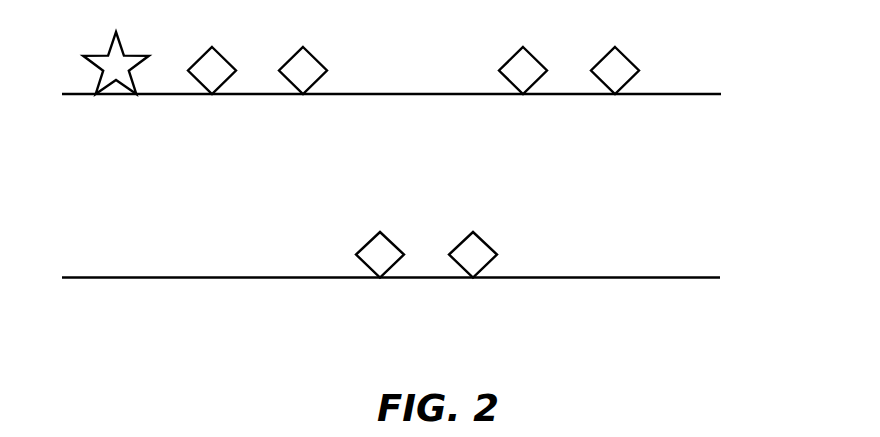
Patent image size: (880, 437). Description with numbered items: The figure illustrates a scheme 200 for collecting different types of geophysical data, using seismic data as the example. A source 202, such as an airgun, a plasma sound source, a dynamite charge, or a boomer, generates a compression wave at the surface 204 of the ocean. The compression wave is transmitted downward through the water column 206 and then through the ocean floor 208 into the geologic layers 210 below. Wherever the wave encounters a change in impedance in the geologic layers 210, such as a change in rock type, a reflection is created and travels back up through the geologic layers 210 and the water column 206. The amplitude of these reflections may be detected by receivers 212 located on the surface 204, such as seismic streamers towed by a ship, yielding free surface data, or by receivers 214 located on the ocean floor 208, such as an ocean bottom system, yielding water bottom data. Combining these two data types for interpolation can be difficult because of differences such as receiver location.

The scheme 200 is at (262, 356).
The source 202 is at (110, 47).
The surface of the ocean 204 is at (701, 93).
The water column 206 is at (692, 177).
The ocean floor 208 is at (701, 277).
The geologic layers 210 is at (692, 343).
The receivers 212 is at (222, 57).
The receivers 214 is at (470, 231).